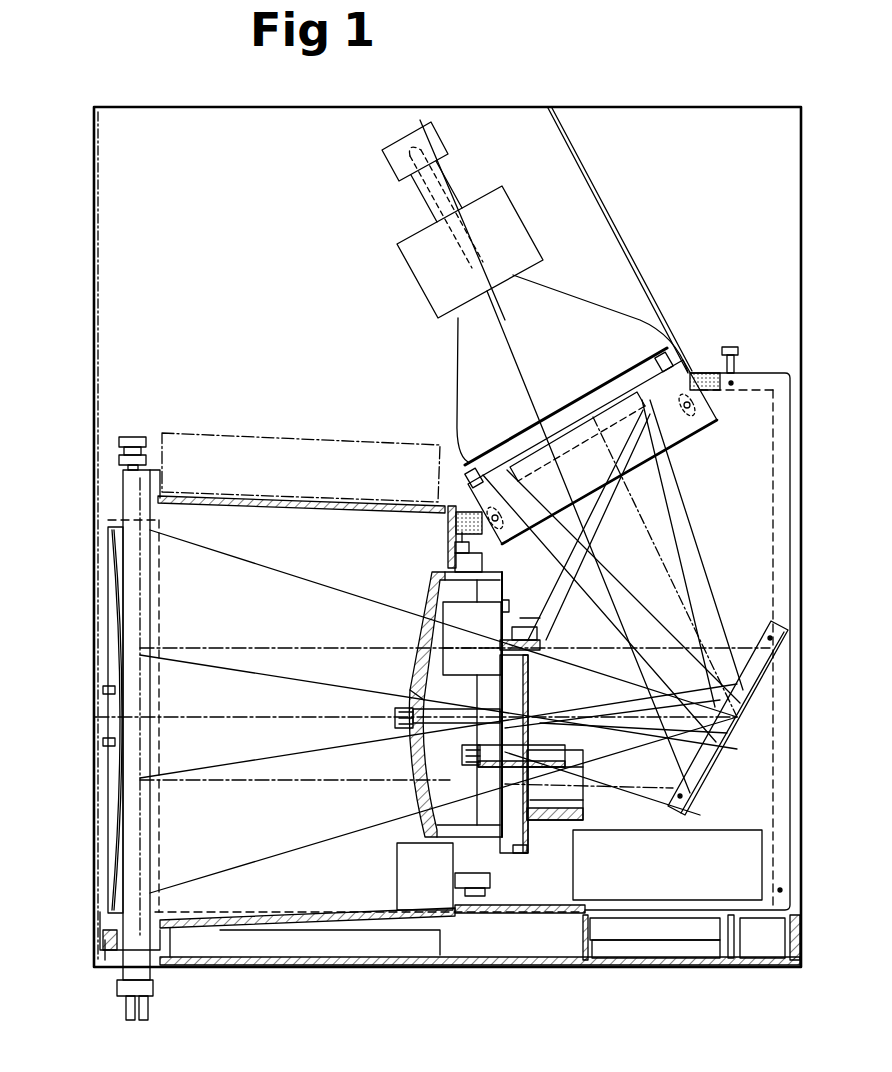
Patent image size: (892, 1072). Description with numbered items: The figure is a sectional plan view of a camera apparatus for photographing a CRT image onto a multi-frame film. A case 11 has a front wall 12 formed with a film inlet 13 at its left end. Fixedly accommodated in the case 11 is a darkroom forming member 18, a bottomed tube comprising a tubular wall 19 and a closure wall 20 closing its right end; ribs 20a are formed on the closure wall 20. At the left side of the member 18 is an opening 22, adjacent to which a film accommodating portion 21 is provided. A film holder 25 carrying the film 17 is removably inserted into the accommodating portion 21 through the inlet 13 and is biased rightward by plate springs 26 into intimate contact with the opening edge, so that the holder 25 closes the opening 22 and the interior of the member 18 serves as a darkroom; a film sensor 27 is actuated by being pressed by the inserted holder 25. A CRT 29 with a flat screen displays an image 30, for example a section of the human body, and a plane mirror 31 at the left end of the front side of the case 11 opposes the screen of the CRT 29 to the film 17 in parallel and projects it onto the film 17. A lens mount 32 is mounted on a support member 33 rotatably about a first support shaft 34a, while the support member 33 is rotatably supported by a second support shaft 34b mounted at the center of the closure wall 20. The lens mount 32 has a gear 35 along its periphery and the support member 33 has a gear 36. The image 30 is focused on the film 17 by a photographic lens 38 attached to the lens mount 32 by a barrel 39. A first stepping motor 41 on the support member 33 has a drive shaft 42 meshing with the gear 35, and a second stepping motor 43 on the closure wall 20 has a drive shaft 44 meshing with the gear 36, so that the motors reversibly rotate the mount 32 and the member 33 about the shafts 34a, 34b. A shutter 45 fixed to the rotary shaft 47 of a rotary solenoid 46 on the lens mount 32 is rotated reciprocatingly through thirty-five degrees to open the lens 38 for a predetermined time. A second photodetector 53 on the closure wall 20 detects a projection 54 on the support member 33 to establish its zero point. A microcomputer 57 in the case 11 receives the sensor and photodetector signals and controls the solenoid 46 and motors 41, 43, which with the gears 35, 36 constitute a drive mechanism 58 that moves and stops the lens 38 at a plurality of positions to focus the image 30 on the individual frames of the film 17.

The case 11 is at (498, 106).
The front wall 12 is at (352, 962).
The film inlet 13 is at (118, 968).
The film 17 is at (150, 612).
The darkroom forming member 18 is at (385, 932).
The tubular wall 19 is at (298, 930).
The closure wall 20 is at (405, 785).
The ribs 20a is at (412, 680).
The film accommodating portion 21 is at (108, 826).
The opening 22 is at (150, 515).
The film holder 25 is at (150, 978).
The plate springs 26 is at (108, 632).
The film sensor 27 is at (118, 450).
The CRT 29 is at (583, 320).
The image 30 is at (637, 466).
The plane mirror 31 is at (706, 770).
The lens mount 32 is at (528, 690).
The support member 33 is at (507, 599).
The first support shaft 34a is at (565, 752).
The second support shaft 34b is at (405, 713).
The gear 35 is at (520, 853).
The gear 36 is at (520, 927).
The photographic lens 38 is at (578, 802).
The barrel 39 is at (548, 820).
The first stepping motor 41 is at (452, 633).
The drive shaft 42 is at (540, 642).
The second stepping motor 43 is at (397, 852).
The drive shaft 44 is at (490, 882).
The shutter 45 is at (565, 792).
The rotary solenoid 46 is at (570, 708).
The rotary shaft 47 is at (558, 712).
The second photodetector 53 is at (492, 542).
The projection 54 is at (482, 560).
The microcomputer 57 is at (765, 840).
The drive mechanism 58 is at (535, 619).